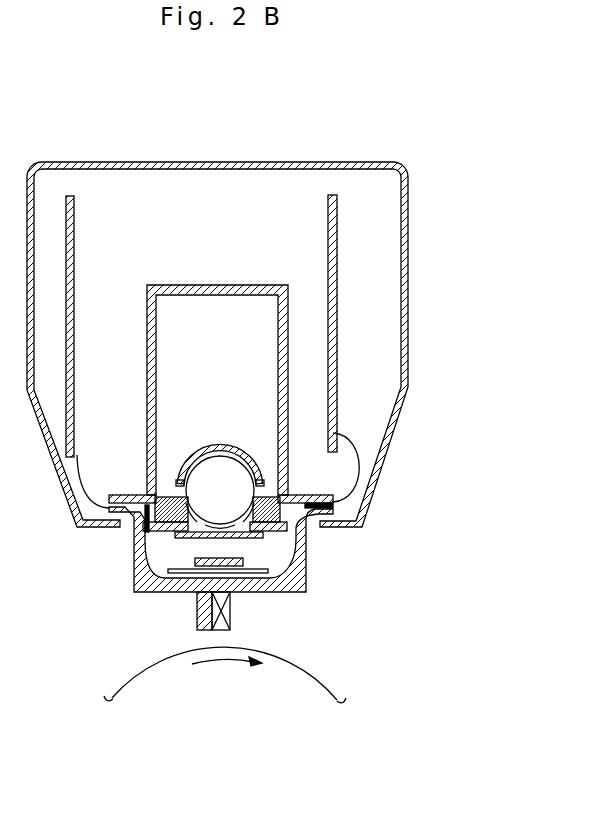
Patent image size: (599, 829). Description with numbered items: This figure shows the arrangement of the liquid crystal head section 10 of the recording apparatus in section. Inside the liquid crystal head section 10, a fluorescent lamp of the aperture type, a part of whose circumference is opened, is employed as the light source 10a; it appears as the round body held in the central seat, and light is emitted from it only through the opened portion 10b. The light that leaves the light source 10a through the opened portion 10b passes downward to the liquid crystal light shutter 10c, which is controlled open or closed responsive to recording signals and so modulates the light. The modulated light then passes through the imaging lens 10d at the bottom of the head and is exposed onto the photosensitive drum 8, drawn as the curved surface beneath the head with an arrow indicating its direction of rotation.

The liquid crystal head section 10 is at (417, 177).
The light source 10a is at (237, 482).
The opened portion 10b is at (238, 517).
The liquid crystal light shutter 10c is at (250, 590).
The imaging lens 10d is at (230, 613).
The photosensitive drum 8 is at (318, 678).